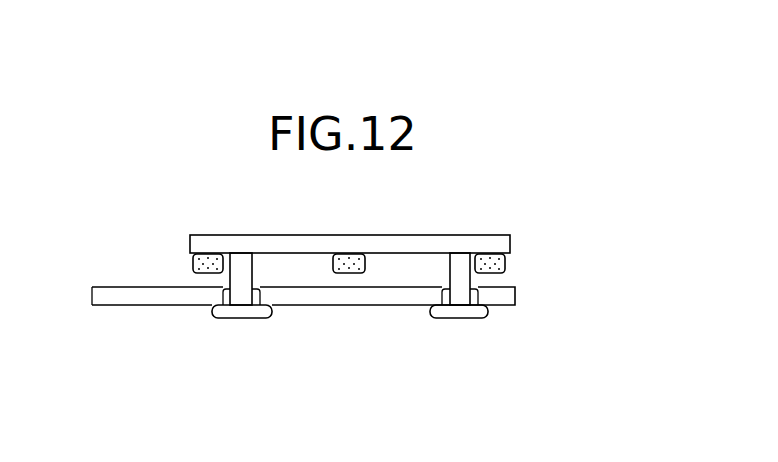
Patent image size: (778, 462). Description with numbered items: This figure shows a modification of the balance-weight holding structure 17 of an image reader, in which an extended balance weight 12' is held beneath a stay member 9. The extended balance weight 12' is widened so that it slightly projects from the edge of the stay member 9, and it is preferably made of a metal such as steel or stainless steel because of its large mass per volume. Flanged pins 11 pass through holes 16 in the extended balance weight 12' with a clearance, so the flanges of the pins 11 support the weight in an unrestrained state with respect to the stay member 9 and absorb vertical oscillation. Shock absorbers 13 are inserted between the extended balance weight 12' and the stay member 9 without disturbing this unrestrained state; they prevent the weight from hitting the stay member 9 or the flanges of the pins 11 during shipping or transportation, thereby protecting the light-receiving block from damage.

The stay member 9 is at (383, 235).
The pins 11 is at (243, 318).
The extended balance weight 12' is at (303, 338).
The shock absorbers 13 is at (192, 263).
The holes 16 is at (446, 287).
The balance-weight holding structure 17 is at (590, 302).